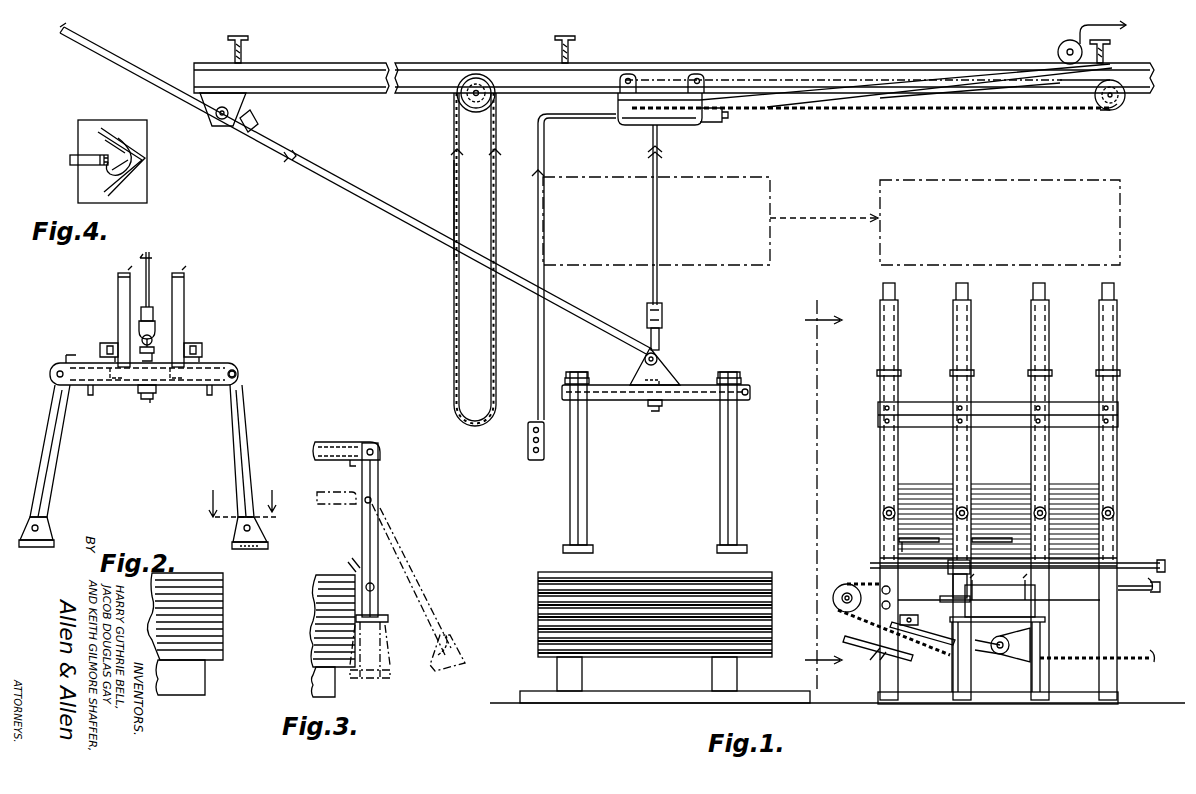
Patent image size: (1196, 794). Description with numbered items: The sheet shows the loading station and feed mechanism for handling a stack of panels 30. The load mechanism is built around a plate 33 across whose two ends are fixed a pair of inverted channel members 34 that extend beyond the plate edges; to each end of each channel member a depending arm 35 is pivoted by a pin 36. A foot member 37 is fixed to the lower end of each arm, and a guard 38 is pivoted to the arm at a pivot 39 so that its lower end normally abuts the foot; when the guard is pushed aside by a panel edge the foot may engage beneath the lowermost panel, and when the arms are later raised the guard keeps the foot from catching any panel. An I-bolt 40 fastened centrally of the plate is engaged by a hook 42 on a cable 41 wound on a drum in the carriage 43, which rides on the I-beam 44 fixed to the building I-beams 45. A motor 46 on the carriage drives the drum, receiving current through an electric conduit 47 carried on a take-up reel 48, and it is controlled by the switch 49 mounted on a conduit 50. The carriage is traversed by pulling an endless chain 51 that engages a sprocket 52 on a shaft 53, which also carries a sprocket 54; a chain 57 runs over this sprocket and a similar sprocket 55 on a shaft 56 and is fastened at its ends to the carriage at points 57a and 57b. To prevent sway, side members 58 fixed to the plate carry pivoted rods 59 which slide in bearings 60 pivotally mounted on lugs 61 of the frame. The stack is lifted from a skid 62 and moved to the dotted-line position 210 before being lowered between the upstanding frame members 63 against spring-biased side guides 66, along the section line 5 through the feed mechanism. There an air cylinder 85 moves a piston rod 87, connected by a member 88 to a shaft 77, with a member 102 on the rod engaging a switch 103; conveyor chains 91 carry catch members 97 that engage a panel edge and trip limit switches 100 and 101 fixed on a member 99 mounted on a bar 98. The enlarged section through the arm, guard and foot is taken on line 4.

In FIG. 2, the section line 4— 4 is at (241, 496).
In FIG. 1, the section line 5— 5 is at (817, 495).
In FIG. 1, the panels 30 is at (538, 650).
In FIG. 2, the panels 30 is at (224, 596).
In FIG. 3, the panels 30 is at (313, 666).
In FIG. 1, the plate 33 is at (669, 397).
In FIG. 2, the plate 33 is at (110, 390).
In FIG. 1, the inverted channel members 34 is at (584, 364).
In FIG. 2, the inverted channel members 34 is at (76, 362).
In FIG. 1, the depending arm 35 is at (720, 475).
In FIG. 2, the depending arm 35 is at (252, 436).
In FIG. 3, the depending arm 35 is at (226, 327).
In FIG. 4, the depending arm 35 is at (140, 146).
In FIG. 1, the pin 36 is at (748, 382).
In FIG. 2, the pin 36 is at (239, 368).
In FIG. 2, the foot member 37 is at (250, 548).
In FIG. 3, the foot member 37 is at (388, 625).
In FIG. 4, the foot member 37 is at (140, 190).
In FIG. 2, the guard 38 is at (233, 534).
In FIG. 3, the guard 38 is at (350, 566).
In FIG. 4, the guard 38 is at (70, 156).
In FIG. 2, the pivot 39 is at (250, 522).
In FIG. 4, the pivot 39 is at (116, 126).
In FIG. 1, the I-bolt 40 is at (660, 348).
In FIG. 2, the I-bolt 40 is at (140, 340).
In FIG. 1, the cable 41 is at (660, 226).
In FIG. 2, the cable 41 is at (154, 266).
In FIG. 1, the hook 42 is at (664, 326).
In FIG. 2, the hook 42 is at (166, 330).
In FIG. 1, the carriage 43 is at (630, 124).
In FIG. 1, the I-beam 44 is at (351, 63).
In FIG. 1, the I-beams 45 is at (250, 46).
In FIG. 1, the motor 46 is at (712, 126).
In FIG. 1, the electric conduit 47 is at (942, 67).
In FIG. 1, the take-up reel 48 is at (1057, 52).
In FIG. 1, the switch 49 is at (528, 448).
In FIG. 1, the conduit 50 is at (540, 228).
In FIG. 1, the endless chain 51 is at (450, 161).
In FIG. 1, the sprocket 52 is at (460, 118).
In FIG. 1, the shaft 53 is at (476, 78).
In FIG. 1, the sprocket 54 is at (454, 98).
In FIG. 1, the sprocket 55 is at (1110, 107).
In FIG. 1, the shaft 56 is at (1123, 99).
In FIG. 1, the chain 57 is at (952, 110).
In FIG. 1, the chain end connection 57a is at (702, 74).
In FIG. 1, the chain end connection 57b is at (628, 76).
In FIG. 1, the side members 58 is at (674, 360).
In FIG. 2, the side members 58 is at (106, 344).
In FIG. 1, the rod 59 is at (413, 236).
In FIG. 1, the bearing 60 is at (251, 122).
In FIG. 1, the lug 61 is at (246, 97).
In FIG. 1, the skid 62 is at (582, 676).
In FIG. 1, the upstanding frame members 63 is at (1012, 490).
In FIG. 1, the side guide 66 is at (1114, 286).
In FIG. 1, the shaft 77 is at (970, 560).
In FIG. 1, the air cylinder 85 is at (997, 633).
In FIG. 1, the piston rod 87 is at (953, 596).
In FIG. 1, the connecting member 88 is at (945, 560).
In FIG. 1, the chains 91 is at (986, 652).
In FIG. 1, the catch members 97 is at (920, 638).
In FIG. 1, the bar 98 is at (882, 666).
In FIG. 1, the member 99 is at (854, 642).
In FIG. 1, the limit switch 100 is at (916, 654).
In FIG. 1, the limit switch 101 is at (860, 622).
In FIG. 1, the member 102 is at (899, 587).
In FIG. 1, the switch 103 is at (899, 605).
In FIG. 1, the dotted line position 210 is at (1060, 180).